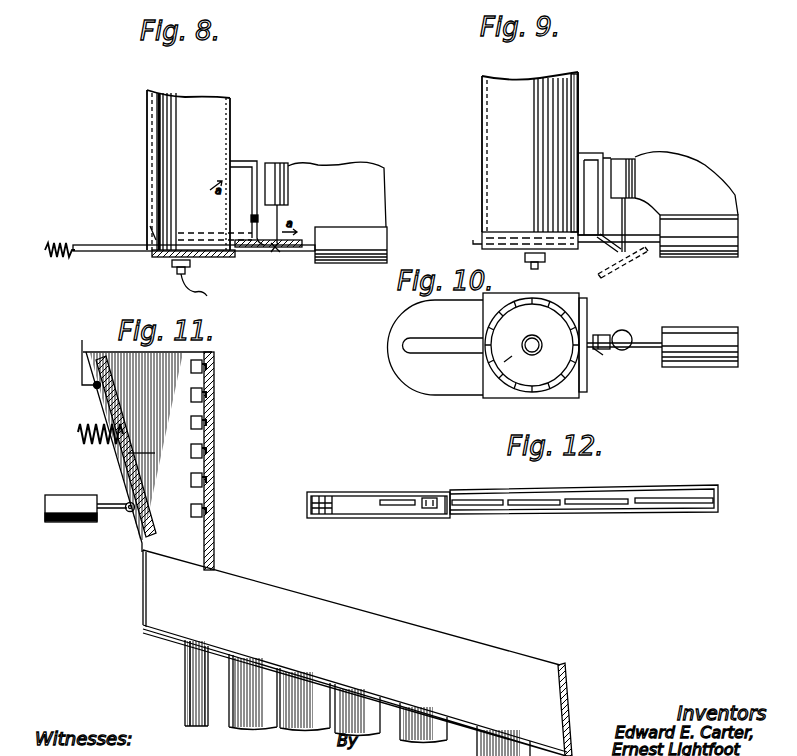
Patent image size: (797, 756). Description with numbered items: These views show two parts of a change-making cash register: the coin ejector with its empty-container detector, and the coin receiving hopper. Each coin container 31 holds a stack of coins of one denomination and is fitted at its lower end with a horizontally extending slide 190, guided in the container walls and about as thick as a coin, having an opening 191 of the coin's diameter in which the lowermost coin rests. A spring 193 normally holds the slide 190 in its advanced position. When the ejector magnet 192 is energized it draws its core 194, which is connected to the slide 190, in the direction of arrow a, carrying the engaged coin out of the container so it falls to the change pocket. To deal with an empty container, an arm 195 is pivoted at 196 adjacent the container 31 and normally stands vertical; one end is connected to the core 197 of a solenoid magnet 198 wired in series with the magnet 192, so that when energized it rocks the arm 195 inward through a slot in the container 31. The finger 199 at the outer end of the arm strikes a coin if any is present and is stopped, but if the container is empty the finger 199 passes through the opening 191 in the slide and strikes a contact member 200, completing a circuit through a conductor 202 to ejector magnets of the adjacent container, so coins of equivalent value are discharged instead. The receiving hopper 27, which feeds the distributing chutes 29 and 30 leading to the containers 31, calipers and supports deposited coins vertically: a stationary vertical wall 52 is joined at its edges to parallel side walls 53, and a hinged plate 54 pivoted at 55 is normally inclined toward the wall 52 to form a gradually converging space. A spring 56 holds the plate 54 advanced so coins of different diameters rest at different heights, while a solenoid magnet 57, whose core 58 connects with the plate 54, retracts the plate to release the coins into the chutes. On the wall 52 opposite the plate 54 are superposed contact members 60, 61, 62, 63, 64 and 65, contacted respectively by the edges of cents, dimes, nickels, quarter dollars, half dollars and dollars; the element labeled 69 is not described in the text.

In FIG. 11, the receiving hopper 27 is at (143, 490).
In FIG. 12, the distributing chute 29 is at (367, 511).
In FIG. 11, the distributing chute 30 is at (360, 616).
In FIG. 8, the coin container 31 is at (231, 118).
In FIG. 9, the coin container 31 is at (579, 109).
In FIG. 10, the coin container 31 is at (524, 394).
In FIG. 11, the coin container 31 is at (245, 693).
In FIG. 11, the vertical wall 52 is at (215, 548).
In FIG. 12, the vertical wall 52 is at (449, 508).
In FIG. 12, the side wall 53 is at (361, 492).
In FIG. 11, the hinged plate 54 is at (151, 454).
In FIG. 12, the hinged plate 54 is at (412, 507).
In FIG. 11, the pivot 55 is at (96, 388).
In FIG. 11, the spring 56 is at (80, 450).
In FIG. 11, the solenoid magnet 57 is at (83, 490).
In FIG. 11, the core 58 is at (109, 512).
In FIG. 11, the contact member 60 is at (210, 506).
In FIG. 11, the contact member 61 is at (210, 475).
In FIG. 11, the contact member 62 is at (210, 446).
In FIG. 11, the contact member 63 is at (210, 418).
In FIG. 11, the contact member 64 is at (210, 390).
In FIG. 11, the contact member 65 is at (210, 362).
In FIG. 11, the bracket 69 is at (82, 368).
In FIG. 8, the slide 190 is at (119, 245).
In FIG. 9, the slide 190 is at (473, 244).
In FIG. 10, the slide 190 is at (436, 350).
In FIG. 8, the opening 191 is at (150, 226).
In FIG. 10, the opening 191 is at (504, 362).
In FIG. 8, the ejector magnet 192 is at (369, 212).
In FIG. 9, the ejector magnet 192 is at (684, 218).
In FIG. 10, the ejector magnet 192 is at (690, 328).
In FIG. 8, the spring 193 is at (61, 244).
In FIG. 8, the core 194 is at (303, 251).
In FIG. 8, the arm 195 is at (263, 163).
In FIG. 9, the arm 195 is at (604, 160).
In FIG. 10, the arm 195 is at (603, 335).
In FIG. 9, the pivot 196 is at (606, 232).
In FIG. 8, the core 197 is at (276, 255).
In FIG. 9, the core 197 is at (606, 250).
In FIG. 8, the solenoid magnet 198 is at (288, 186).
In FIG. 9, the solenoid magnet 198 is at (636, 166).
In FIG. 10, the solenoid magnet 198 is at (632, 336).
In FIG. 8, the finger 199 is at (231, 163).
In FIG. 10, the finger 199 is at (598, 352).
In FIG. 8, the contact member 200 is at (172, 265).
In FIG. 9, the contact member 200 is at (545, 258).
In FIG. 10, the contact member 200 is at (532, 353).
In FIG. 8, the conductor 202 is at (210, 288).
In FIG. 9, the conductor 202 is at (538, 269).